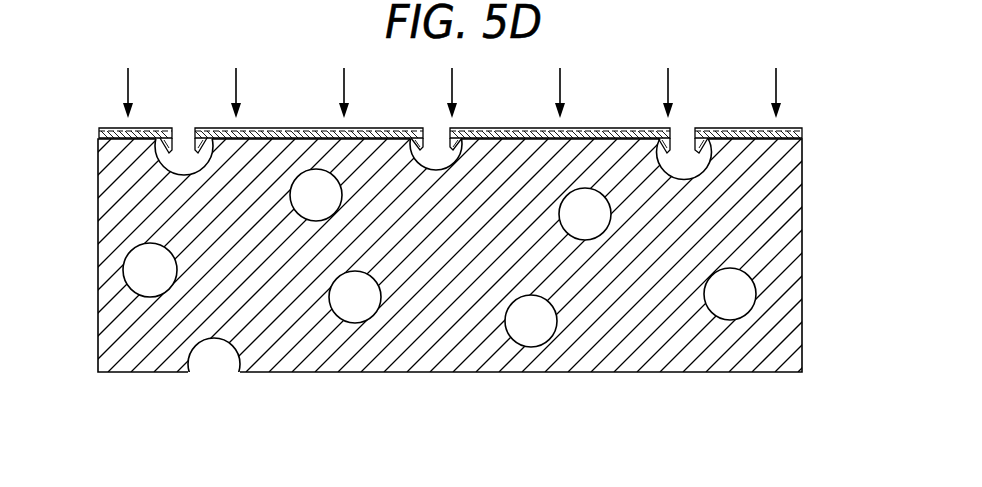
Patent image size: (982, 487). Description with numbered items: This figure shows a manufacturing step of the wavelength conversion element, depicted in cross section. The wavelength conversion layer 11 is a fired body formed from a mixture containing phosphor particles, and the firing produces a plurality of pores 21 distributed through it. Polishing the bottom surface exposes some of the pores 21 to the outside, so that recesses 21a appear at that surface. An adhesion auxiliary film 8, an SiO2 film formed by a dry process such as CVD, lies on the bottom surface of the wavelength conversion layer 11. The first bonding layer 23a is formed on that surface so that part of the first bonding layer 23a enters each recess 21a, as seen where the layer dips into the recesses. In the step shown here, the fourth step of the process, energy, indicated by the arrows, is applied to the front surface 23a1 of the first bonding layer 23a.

The adhesion auxiliary film 8 is at (497, 151).
The wavelength conversion layer 11 is at (789, 278).
The pores 21 is at (323, 221).
The recesses 21a is at (195, 164).
The first bonding layer 23a is at (803, 134).
The front surface 23a1 is at (783, 128).